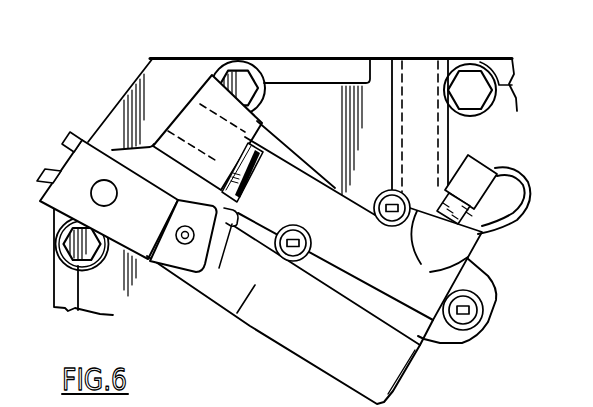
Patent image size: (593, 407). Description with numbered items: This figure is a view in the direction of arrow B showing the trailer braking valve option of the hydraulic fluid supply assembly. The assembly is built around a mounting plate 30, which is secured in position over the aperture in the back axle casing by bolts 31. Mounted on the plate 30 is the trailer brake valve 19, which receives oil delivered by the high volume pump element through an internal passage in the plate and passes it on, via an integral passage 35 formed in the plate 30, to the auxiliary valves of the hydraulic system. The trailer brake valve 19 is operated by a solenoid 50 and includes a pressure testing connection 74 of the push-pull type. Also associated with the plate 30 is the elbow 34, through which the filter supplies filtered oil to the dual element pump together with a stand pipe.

The trailer brake valve 19 is at (424, 349).
The mounting plate 30 is at (315, 132).
The bolts 31 is at (68, 242).
The elbow 34 is at (403, 80).
The integral passage 35 is at (193, 100).
The solenoid 50 is at (82, 147).
The pressure testing connection 74 is at (486, 182).